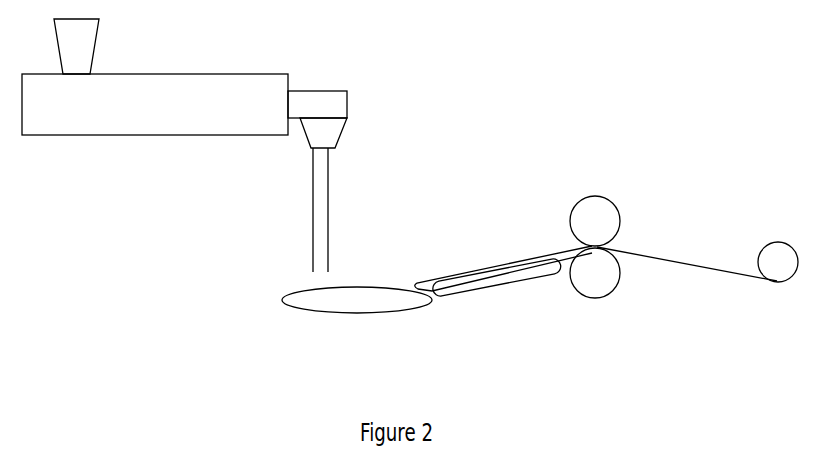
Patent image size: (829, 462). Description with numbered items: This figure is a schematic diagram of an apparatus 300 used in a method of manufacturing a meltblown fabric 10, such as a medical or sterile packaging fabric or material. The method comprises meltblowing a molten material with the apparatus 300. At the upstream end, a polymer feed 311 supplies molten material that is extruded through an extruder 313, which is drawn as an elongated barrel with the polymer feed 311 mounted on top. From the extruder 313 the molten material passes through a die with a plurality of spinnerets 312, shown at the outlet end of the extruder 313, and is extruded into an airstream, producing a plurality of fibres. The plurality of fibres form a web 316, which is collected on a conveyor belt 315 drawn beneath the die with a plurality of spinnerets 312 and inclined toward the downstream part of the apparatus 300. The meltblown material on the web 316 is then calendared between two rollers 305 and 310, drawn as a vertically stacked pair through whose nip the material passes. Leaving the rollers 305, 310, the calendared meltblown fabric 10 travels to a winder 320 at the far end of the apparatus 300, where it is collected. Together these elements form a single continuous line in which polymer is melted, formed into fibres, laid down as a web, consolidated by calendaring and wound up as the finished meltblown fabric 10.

The apparatus 300 is at (530, 145).
The polymer feed 311 is at (77, 45).
The extruder 313 is at (226, 74).
The die with a plurality of spinnerets 312 is at (340, 137).
The web 316 is at (415, 280).
The conveyor belt 315 is at (508, 281).
The roller 305 is at (608, 211).
The roller 310 is at (610, 277).
The meltblown fabric 10 is at (677, 263).
The winder 320 is at (778, 268).